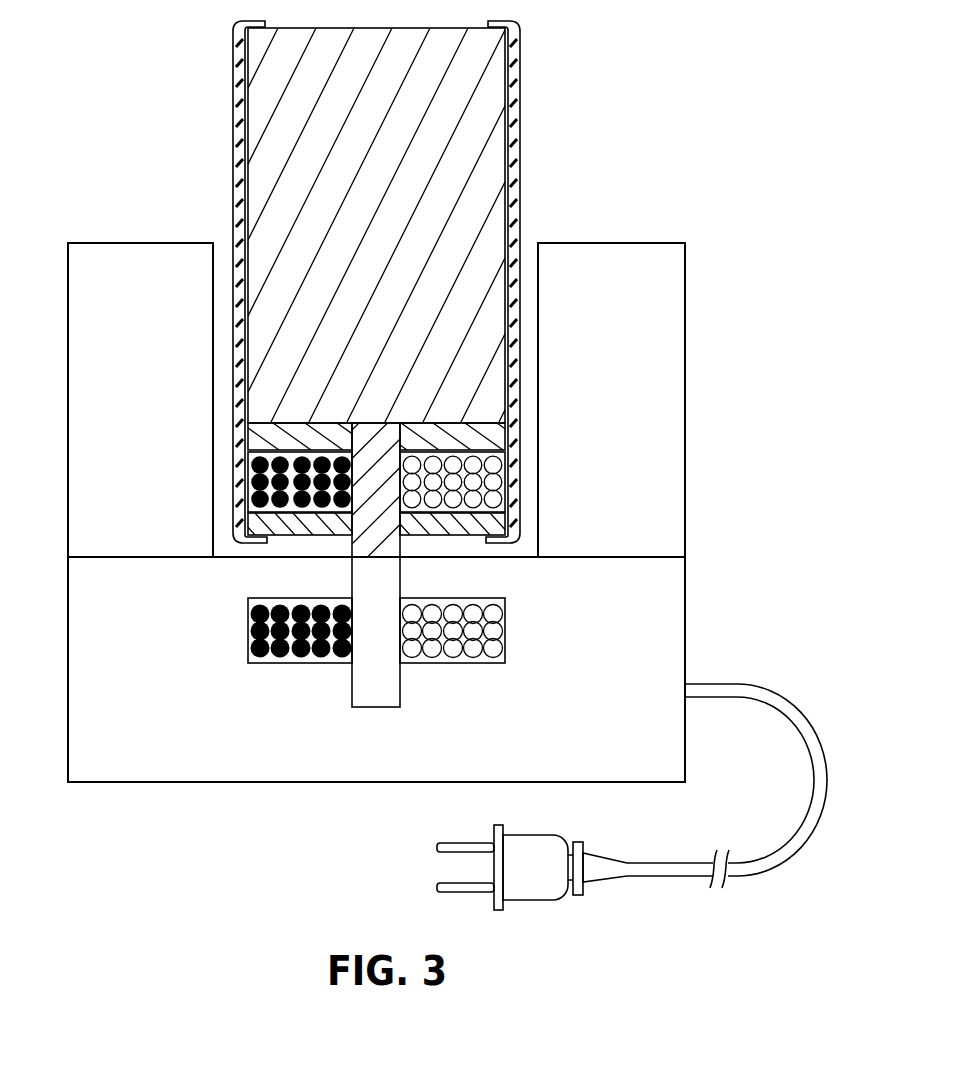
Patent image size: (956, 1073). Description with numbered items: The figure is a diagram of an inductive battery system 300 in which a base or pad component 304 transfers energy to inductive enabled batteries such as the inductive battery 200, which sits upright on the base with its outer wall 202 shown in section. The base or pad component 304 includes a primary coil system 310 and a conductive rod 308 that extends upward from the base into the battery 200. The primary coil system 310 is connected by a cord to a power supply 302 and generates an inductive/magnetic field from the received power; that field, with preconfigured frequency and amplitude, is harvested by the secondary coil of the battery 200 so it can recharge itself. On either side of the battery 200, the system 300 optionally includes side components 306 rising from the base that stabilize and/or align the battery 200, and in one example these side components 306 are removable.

The inductive battery 200 is at (389, 277).
The container wall / sleeve 202 is at (233, 125).
The inductive battery system 300 is at (420, 590).
The power supply 302 is at (537, 882).
The base or pad component 304 is at (665, 636).
The side components 306 is at (663, 401).
The conductive rod 308 is at (380, 693).
The primary coil system 310 is at (320, 655).